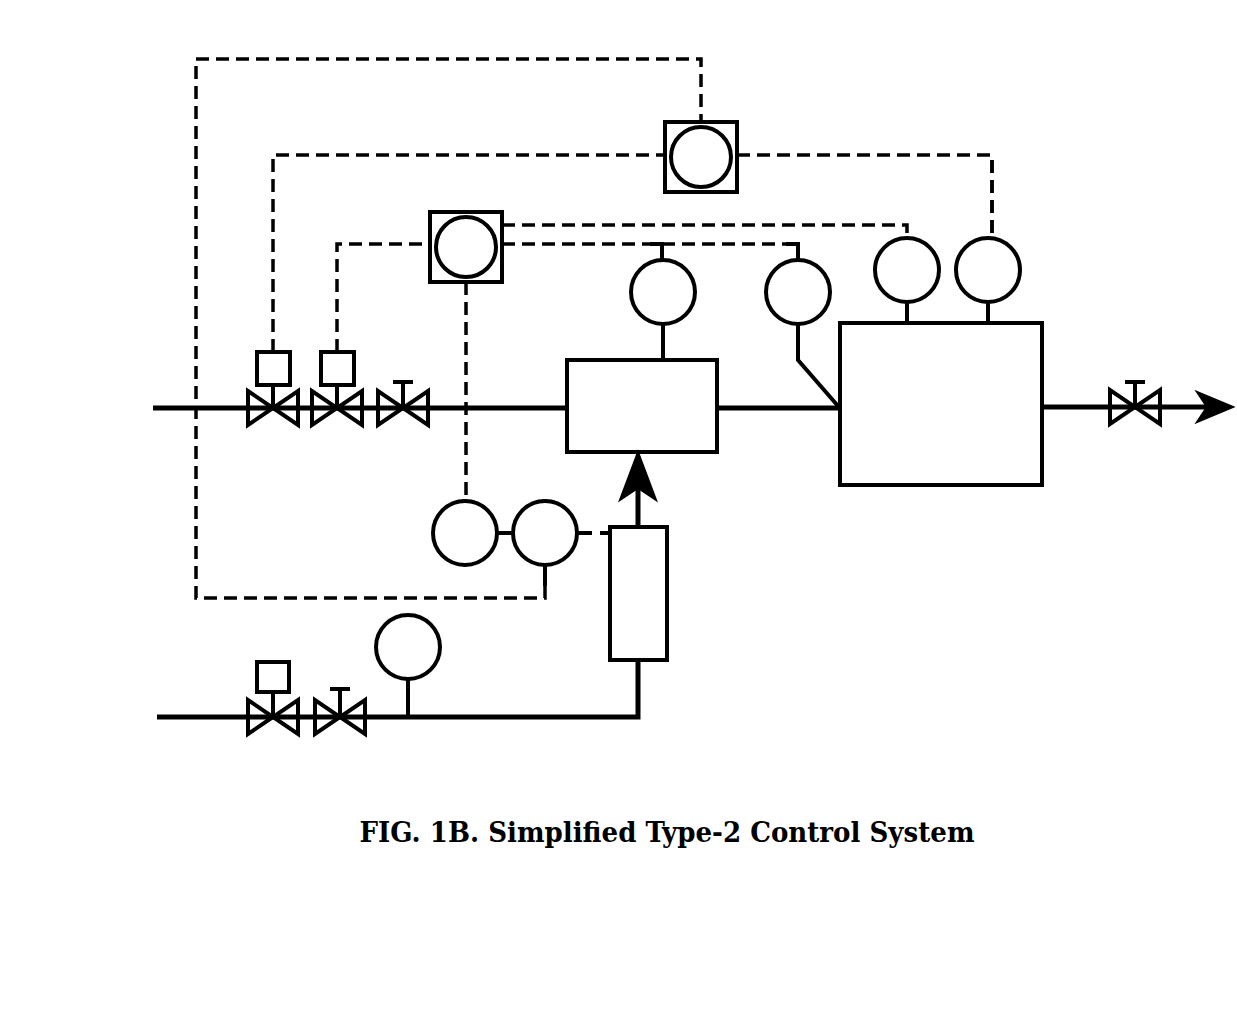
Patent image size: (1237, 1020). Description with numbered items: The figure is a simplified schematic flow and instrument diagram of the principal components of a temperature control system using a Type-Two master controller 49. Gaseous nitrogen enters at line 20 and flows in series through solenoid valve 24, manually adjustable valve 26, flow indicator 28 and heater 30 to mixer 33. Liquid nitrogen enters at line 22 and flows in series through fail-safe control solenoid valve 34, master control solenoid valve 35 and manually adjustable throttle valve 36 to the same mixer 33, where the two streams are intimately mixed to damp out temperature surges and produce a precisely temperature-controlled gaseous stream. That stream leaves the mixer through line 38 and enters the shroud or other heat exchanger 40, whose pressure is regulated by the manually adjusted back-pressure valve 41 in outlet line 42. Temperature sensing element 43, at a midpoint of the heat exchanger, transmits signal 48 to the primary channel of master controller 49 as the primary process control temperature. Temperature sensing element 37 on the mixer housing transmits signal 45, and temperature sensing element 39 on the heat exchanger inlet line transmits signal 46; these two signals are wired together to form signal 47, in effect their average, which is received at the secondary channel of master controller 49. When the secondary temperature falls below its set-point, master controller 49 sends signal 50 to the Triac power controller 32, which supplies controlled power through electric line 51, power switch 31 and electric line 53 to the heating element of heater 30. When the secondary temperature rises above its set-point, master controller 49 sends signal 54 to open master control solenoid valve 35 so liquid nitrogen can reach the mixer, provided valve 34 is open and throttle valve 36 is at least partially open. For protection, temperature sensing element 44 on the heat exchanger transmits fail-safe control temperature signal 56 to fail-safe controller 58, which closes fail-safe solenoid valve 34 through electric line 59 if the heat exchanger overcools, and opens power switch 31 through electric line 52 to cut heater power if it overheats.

The gaseous nitrogen line 20 is at (192, 712).
The liquid nitrogen line 22 is at (173, 412).
The solenoid valve 24 is at (262, 724).
The manually adjustable valve 26 is at (347, 728).
The flow indicator 28 is at (440, 642).
The heater 30 is at (667, 592).
The power switch 31 is at (560, 503).
The Triac power controller 32 is at (487, 503).
The mixer 33 is at (547, 383).
The fail-safe control solenoid valve 34 is at (252, 422).
The master control solenoid valve 35 is at (322, 423).
The manually adjustable throttle valve 36 is at (387, 423).
The temperature sensing element 37 is at (631, 302).
The line 38 is at (762, 398).
The temperature sensing element 39 is at (767, 303).
The shroud or other heat exchanger 40 is at (907, 485).
The manually adjusted back-pressure valve 41 is at (1117, 420).
The line 42 is at (1055, 405).
The temperature sensing element 43 is at (875, 268).
The temperature sensing element 44 is at (1020, 270).
The signal 45 is at (660, 250).
The signal 46 is at (797, 250).
The signal 47 is at (552, 250).
The signal 48 is at (558, 224).
The master controller 49 is at (428, 260).
The signal 50 is at (462, 350).
The electric line 51 is at (505, 540).
The electric line 52 is at (358, 60).
The electric line 53 is at (586, 540).
The signal 54 is at (337, 280).
The fail-safe control temperature signal 56 is at (992, 174).
The fail-safe controller 58 is at (737, 167).
The electric line 59 is at (341, 155).